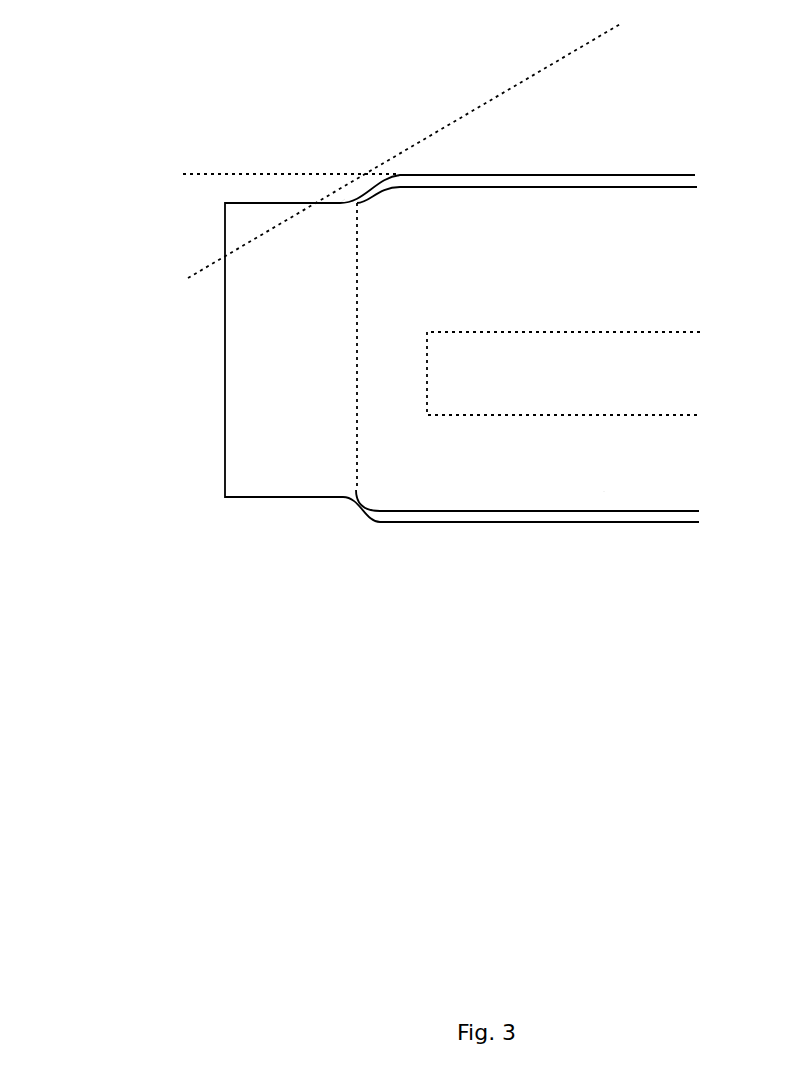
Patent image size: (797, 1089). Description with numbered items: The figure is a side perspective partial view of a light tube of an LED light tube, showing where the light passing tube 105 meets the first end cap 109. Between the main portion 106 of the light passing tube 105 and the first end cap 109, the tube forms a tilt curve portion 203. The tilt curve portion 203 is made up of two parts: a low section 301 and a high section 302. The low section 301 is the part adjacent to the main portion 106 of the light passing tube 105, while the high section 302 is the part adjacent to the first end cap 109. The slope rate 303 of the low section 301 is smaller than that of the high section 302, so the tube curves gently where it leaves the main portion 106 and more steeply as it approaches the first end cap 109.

The light passing tube 105 is at (440, 523).
The main portion 106 is at (604, 491).
The first end cap 109 is at (248, 382).
The tilt curve portion 203 is at (383, 188).
The low section 301 is at (340, 202).
The high section 302 is at (398, 177).
The slope rate 303 is at (360, 175).